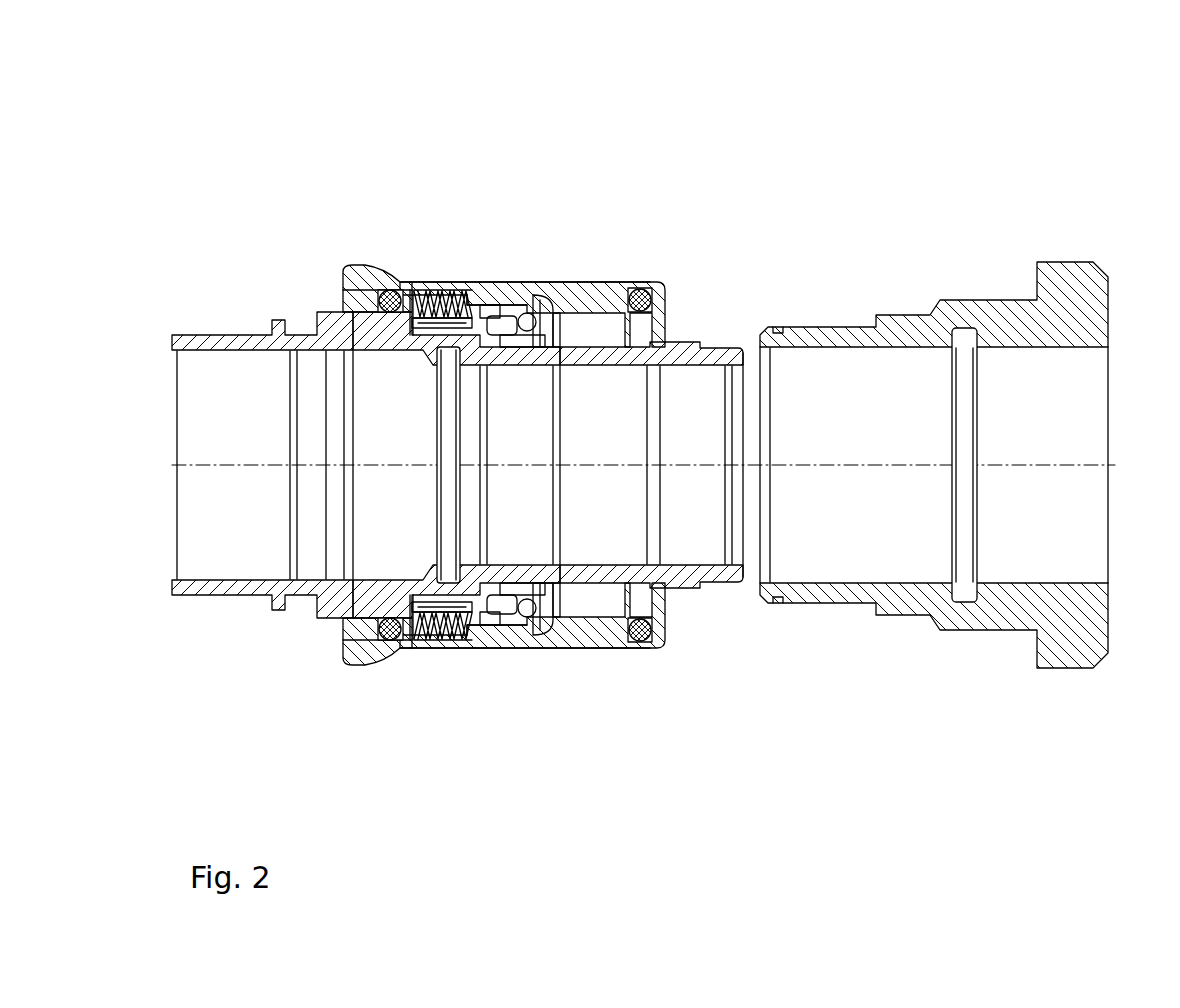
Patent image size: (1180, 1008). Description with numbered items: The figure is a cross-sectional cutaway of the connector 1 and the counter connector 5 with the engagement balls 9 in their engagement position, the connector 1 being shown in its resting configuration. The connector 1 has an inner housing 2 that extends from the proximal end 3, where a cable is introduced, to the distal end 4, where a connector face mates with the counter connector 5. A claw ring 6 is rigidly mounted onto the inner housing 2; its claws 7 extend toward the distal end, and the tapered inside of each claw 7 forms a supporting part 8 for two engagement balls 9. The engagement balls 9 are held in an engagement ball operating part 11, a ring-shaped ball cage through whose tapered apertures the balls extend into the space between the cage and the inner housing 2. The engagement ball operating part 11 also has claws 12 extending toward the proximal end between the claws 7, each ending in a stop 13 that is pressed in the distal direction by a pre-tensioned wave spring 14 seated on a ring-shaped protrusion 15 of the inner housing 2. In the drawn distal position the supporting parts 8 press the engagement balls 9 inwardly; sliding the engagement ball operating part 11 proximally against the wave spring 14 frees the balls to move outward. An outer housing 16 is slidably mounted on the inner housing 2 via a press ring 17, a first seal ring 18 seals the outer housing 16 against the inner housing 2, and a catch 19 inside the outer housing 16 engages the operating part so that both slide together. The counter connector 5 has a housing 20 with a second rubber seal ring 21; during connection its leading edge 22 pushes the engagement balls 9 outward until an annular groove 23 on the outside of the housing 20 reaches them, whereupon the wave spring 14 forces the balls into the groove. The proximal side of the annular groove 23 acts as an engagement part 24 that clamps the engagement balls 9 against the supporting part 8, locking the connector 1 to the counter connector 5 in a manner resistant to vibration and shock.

The connector 1 is at (588, 130).
The inner housing 2 is at (541, 450).
The proximal end 3 is at (170, 462).
The distal end 4 is at (747, 360).
The counter connector 5 is at (981, 106).
The claw ring 6 is at (435, 282).
The claw 7 is at (484, 632).
The supporting part 8 is at (543, 622).
The engagement ball 9 is at (530, 618).
The engagement ball operating part 11 is at (540, 292).
The claw 12 is at (505, 292).
The stop 13 is at (466, 282).
The wave spring 14 is at (440, 640).
The ring-shaped protrusion 15 is at (410, 634).
The outer housing 16 is at (600, 288).
The press ring 17 is at (345, 628).
The first seal ring 18 is at (388, 288).
The catch 19 is at (487, 292).
The housing of the counter connector 20 is at (886, 315).
The second rubber seal ring 21 is at (641, 633).
The leading edge 22 is at (758, 600).
The annular groove 23 is at (776, 327).
The engagement part 24 is at (776, 603).